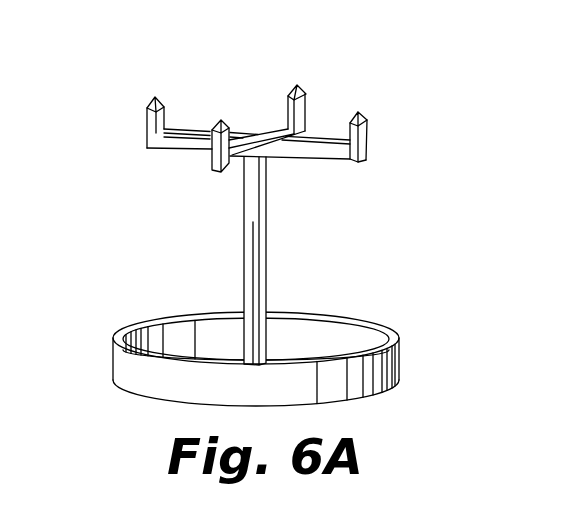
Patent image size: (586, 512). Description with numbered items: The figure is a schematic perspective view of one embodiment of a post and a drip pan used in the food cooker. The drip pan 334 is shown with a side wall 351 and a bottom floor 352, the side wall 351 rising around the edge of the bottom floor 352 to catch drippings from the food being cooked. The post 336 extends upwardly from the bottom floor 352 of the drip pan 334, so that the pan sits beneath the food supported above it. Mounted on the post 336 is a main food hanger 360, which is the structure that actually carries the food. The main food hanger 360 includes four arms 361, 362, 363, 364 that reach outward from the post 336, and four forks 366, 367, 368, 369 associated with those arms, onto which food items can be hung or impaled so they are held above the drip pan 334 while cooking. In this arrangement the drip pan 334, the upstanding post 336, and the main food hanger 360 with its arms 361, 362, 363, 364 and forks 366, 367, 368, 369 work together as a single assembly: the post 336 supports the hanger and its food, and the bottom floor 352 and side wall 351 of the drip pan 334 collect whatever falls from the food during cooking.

The drip pan 334 is at (220, 348).
The post 336 is at (118, 225).
The side wall 351 is at (150, 378).
The bottom floor 352 is at (287, 358).
The main food hanger 360 is at (325, 124).
The arm 361 is at (338, 158).
The arm 362 is at (280, 127).
The arm 363 is at (187, 146).
The arm 364 is at (268, 158).
The fork 366 is at (368, 127).
The fork 367 is at (308, 102).
The fork 368 is at (165, 110).
The fork 369 is at (213, 163).